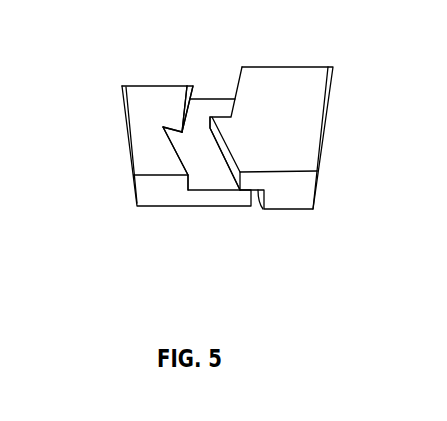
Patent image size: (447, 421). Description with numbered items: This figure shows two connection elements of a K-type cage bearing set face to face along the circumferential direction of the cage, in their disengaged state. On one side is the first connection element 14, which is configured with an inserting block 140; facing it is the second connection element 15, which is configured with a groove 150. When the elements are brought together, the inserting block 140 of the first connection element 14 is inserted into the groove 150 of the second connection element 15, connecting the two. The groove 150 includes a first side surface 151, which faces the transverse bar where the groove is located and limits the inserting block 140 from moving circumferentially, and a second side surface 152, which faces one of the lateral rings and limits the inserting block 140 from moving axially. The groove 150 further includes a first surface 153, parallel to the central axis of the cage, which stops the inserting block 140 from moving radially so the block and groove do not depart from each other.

The first connection element 14 is at (316, 75).
The inserting block 140 is at (219, 122).
The second connection element 15 is at (123, 87).
The groove 150 is at (179, 138).
The first side surface 151 is at (156, 123).
The second side surface 152 is at (159, 149).
The first surface 153 is at (175, 119).